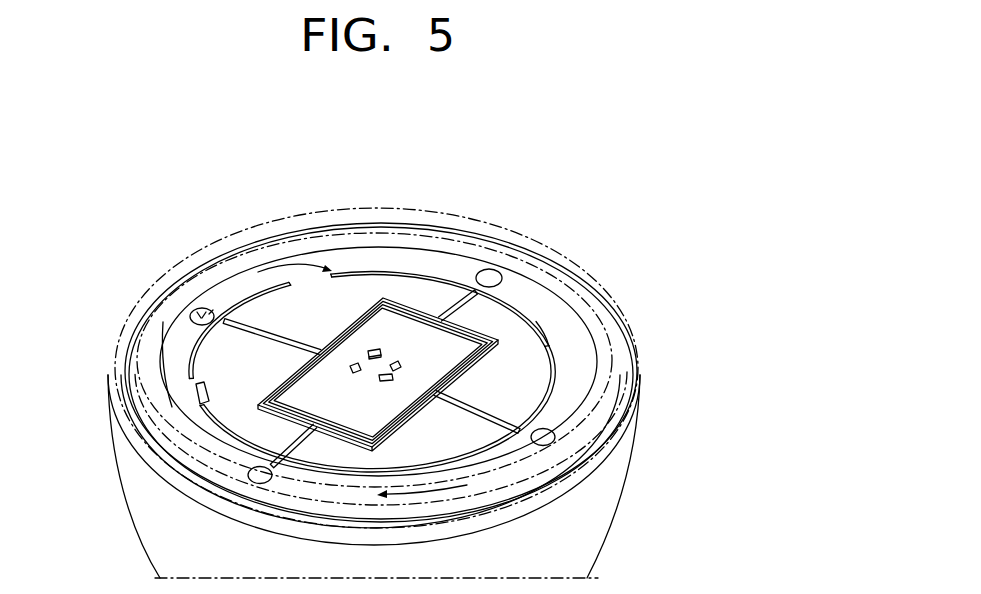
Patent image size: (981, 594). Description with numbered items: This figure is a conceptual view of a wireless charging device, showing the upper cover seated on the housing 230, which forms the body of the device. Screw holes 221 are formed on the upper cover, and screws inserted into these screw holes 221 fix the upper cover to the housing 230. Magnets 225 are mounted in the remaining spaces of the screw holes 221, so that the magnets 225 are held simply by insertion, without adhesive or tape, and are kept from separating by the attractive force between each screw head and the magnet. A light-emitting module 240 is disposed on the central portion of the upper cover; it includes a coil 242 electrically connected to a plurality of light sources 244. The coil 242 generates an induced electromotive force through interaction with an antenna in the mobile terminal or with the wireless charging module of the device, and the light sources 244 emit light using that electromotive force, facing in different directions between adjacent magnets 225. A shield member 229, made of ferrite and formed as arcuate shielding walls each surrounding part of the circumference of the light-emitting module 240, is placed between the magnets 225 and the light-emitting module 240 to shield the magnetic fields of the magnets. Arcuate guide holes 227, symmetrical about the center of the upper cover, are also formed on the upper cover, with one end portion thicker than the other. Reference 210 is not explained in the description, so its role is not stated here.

The housing rim 210 is at (262, 220).
The screw holes 221 is at (206, 310).
The magnets 225 is at (191, 317).
The guide holes 227 is at (194, 388).
The shield member 229 is at (512, 298).
The housing 230 is at (630, 522).
The light-emitting module 240 is at (508, 350).
The coil 242 is at (410, 306).
The light sources 244 is at (376, 349).